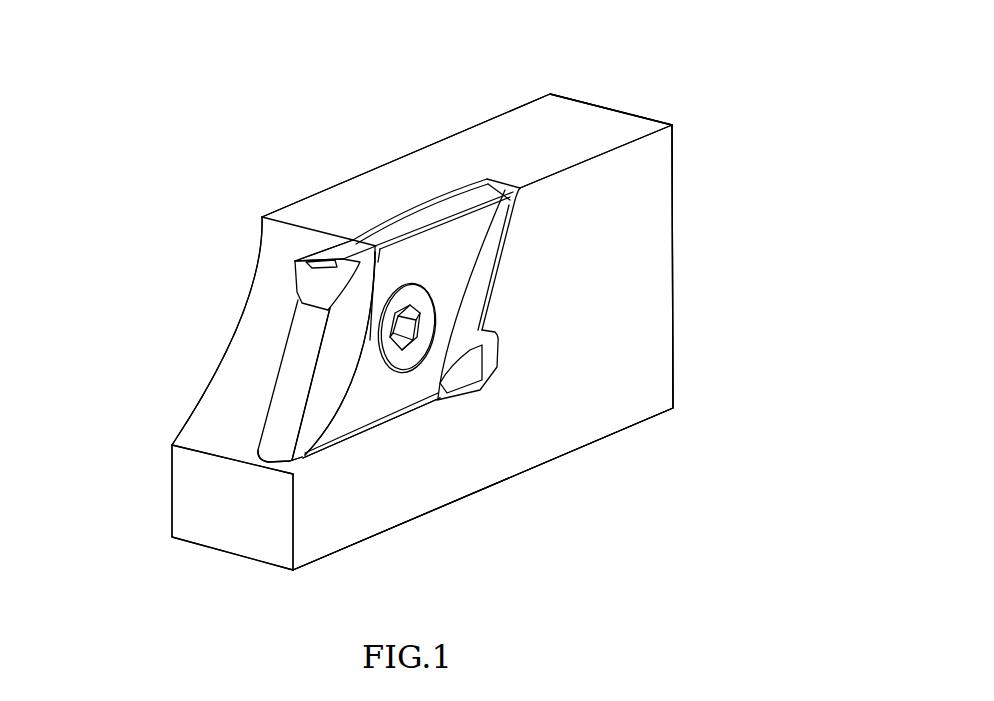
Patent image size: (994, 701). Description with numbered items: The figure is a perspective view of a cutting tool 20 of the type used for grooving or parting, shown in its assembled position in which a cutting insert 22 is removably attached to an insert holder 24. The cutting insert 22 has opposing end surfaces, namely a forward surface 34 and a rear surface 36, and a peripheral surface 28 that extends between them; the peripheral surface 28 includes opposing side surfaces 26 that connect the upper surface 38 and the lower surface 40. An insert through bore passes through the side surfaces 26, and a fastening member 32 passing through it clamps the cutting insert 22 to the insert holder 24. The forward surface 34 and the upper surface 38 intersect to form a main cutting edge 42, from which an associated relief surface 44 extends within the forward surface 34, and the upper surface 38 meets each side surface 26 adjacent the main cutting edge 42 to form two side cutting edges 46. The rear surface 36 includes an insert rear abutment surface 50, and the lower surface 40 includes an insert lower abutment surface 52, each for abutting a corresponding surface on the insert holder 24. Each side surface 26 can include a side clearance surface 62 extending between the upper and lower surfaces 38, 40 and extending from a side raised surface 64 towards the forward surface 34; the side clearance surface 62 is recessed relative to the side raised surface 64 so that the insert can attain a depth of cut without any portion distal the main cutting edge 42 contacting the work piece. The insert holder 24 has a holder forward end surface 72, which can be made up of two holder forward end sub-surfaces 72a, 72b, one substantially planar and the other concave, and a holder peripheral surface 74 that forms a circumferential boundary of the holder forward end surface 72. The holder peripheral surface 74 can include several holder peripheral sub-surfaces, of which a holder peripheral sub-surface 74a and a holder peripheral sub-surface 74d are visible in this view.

The cutting tool 20 is at (692, 85).
The cutting insert 22 is at (268, 313).
The insert holder 24 is at (690, 190).
The side surfaces 26 is at (382, 412).
The peripheral surface 28 is at (445, 210).
The fastening member 32 is at (412, 352).
The forward surface 34 is at (283, 410).
The rear surface 36 is at (520, 217).
The upper surface 38 is at (477, 193).
The lower surface 40 is at (362, 436).
The main cutting edge 42 is at (312, 260).
The relief surface 44 is at (305, 280).
The side cutting edges 46 is at (318, 263).
The insert rear abutment surface 50 is at (513, 231).
The insert lower abutment surface 52 is at (332, 450).
The side clearance surface 62 is at (340, 318).
The side raised surface 64 is at (452, 262).
The holder forward end surface 72 is at (243, 369).
The holder forward end sub-surface 72a is at (193, 432).
The holder forward end sub-surface 72b is at (190, 483).
The holder peripheral surface 74 is at (638, 310).
The holder peripheral sub-surface 74a is at (645, 358).
The holder peripheral sub-surface 74d is at (553, 107).